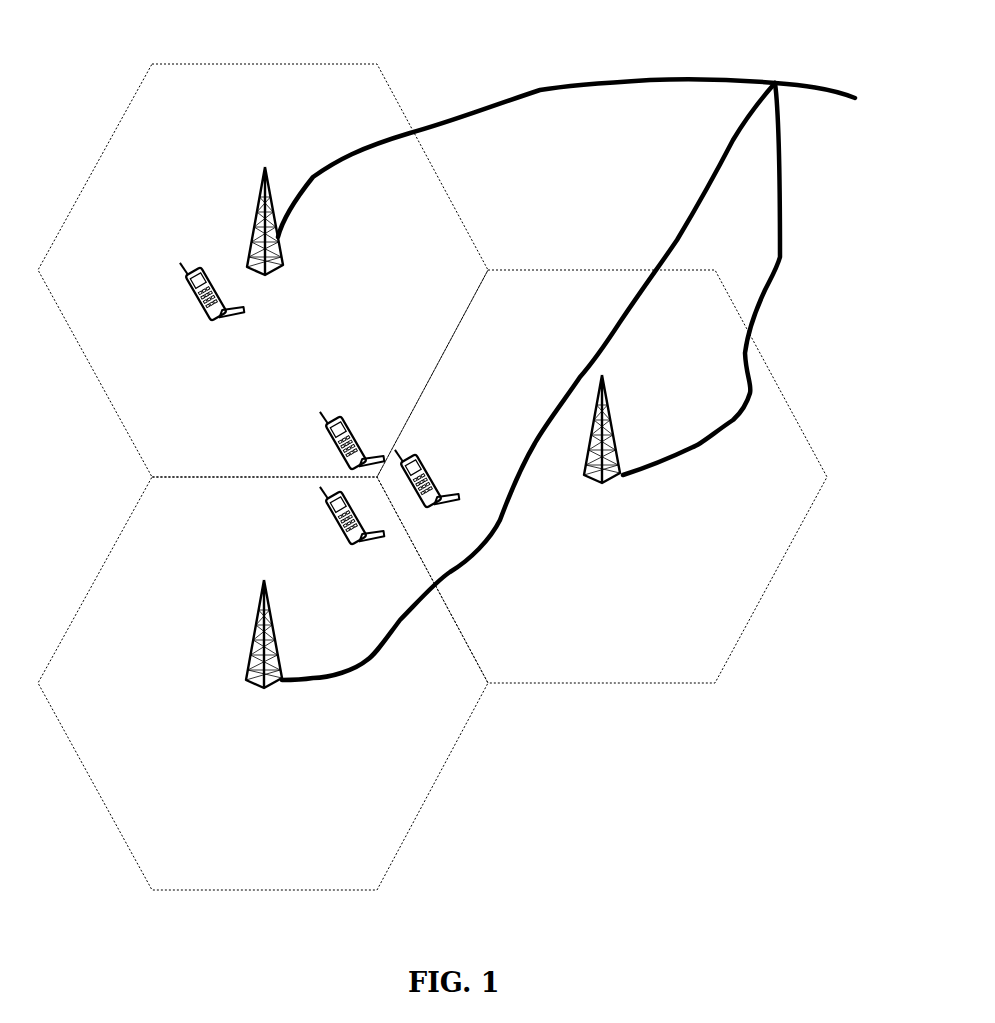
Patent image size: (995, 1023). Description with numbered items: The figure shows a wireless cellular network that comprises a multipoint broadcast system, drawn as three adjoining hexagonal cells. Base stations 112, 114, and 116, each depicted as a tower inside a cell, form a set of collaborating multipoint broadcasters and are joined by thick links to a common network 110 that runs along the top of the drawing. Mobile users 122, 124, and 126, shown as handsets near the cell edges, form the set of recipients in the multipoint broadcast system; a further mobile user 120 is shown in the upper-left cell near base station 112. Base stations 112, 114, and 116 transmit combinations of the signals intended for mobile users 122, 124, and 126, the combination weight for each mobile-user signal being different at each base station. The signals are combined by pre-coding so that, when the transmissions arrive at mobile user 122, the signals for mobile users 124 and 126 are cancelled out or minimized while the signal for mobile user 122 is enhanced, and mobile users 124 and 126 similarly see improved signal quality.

The network / backhaul links 110 is at (566, 365).
The base station 112 is at (245, 221).
The base station 114 is at (622, 429).
The base station 116 is at (244, 634).
The mobile station 120 is at (194, 287).
The mobile user 122 is at (335, 436).
The mobile user 124 is at (434, 474).
The mobile user 126 is at (335, 511).